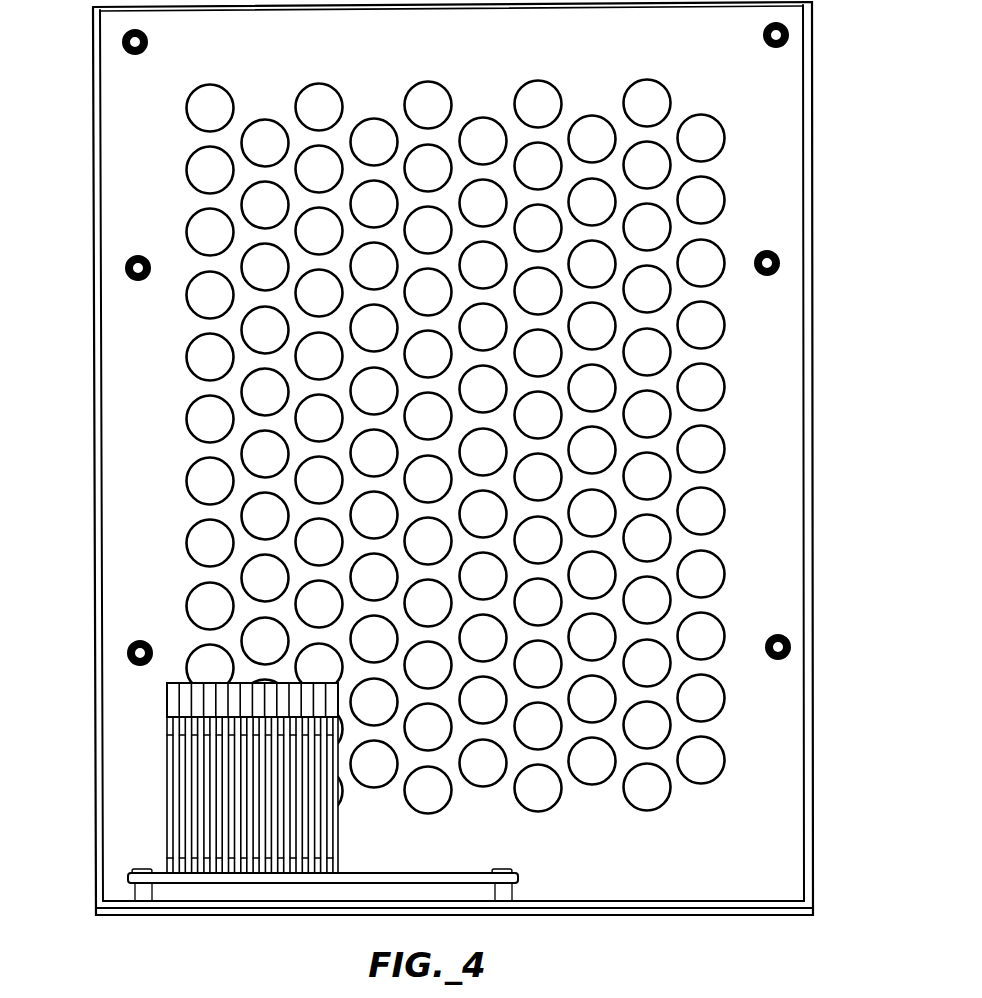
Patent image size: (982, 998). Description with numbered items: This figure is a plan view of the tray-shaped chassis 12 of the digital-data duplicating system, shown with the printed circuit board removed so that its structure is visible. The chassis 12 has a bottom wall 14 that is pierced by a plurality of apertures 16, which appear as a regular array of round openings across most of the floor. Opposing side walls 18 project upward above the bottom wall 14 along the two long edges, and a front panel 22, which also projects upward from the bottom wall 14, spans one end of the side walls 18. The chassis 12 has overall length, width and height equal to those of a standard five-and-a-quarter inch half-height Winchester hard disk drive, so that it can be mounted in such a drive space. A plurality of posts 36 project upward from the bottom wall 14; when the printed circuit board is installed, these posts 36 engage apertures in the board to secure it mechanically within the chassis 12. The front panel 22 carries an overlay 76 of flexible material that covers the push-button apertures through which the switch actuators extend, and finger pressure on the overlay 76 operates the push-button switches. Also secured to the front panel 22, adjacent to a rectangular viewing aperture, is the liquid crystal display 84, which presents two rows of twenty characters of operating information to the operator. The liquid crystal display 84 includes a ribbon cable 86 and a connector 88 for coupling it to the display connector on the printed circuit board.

The chassis 12 is at (96, 470).
The bottom wall 14 is at (289, 48).
The apertures 16 is at (263, 333).
The side walls 18 is at (95, 165).
The front panel 22 is at (97, 908).
The posts 36 is at (135, 54).
The overlay 76 is at (97, 915).
The liquid crystal display 84 is at (410, 873).
The ribbon cable 86 is at (170, 798).
The connector 88 is at (167, 700).